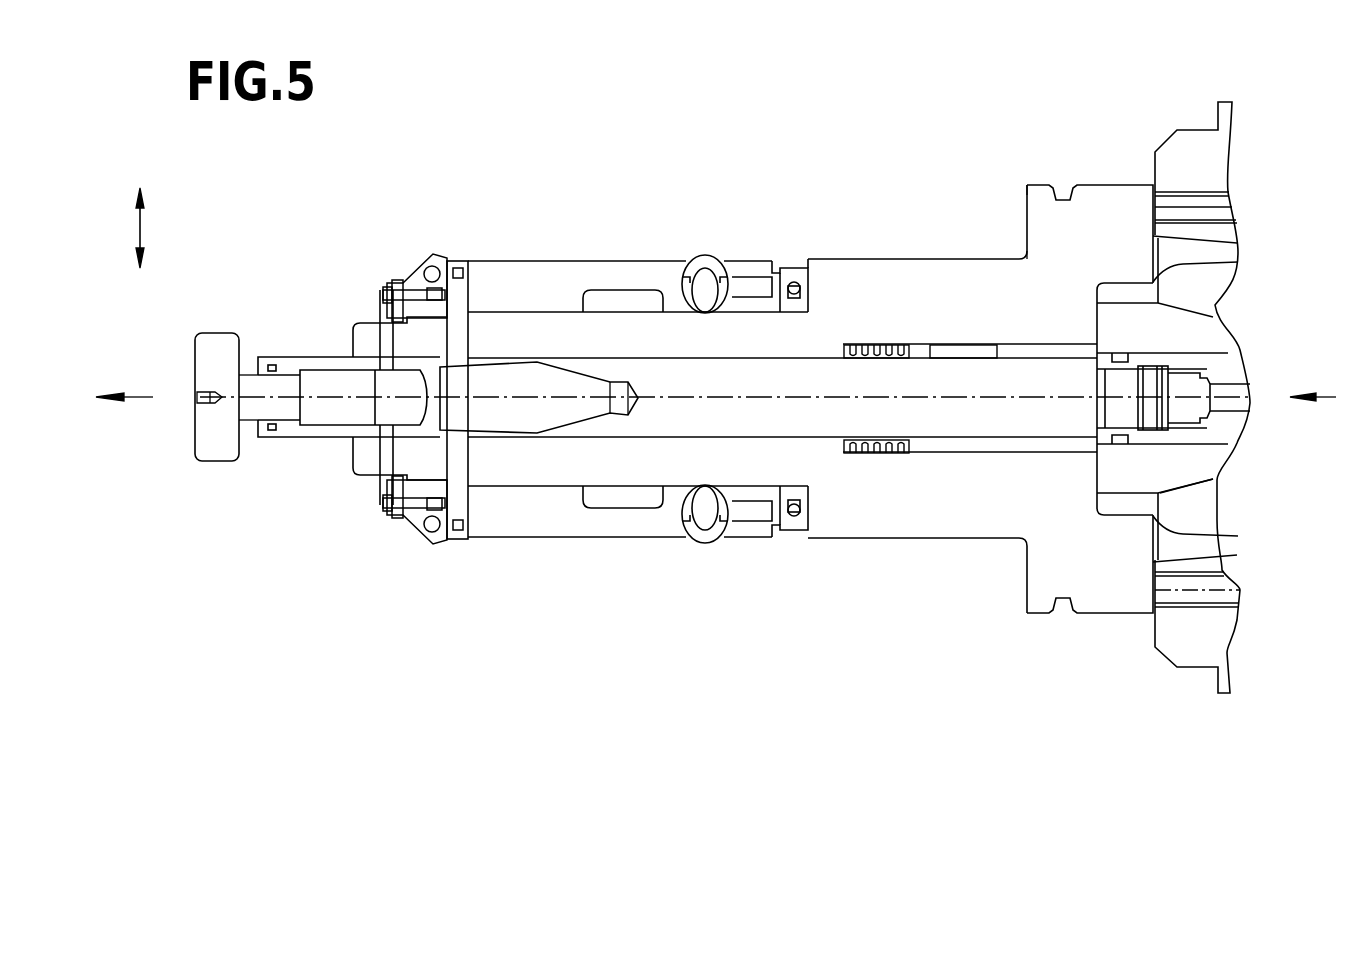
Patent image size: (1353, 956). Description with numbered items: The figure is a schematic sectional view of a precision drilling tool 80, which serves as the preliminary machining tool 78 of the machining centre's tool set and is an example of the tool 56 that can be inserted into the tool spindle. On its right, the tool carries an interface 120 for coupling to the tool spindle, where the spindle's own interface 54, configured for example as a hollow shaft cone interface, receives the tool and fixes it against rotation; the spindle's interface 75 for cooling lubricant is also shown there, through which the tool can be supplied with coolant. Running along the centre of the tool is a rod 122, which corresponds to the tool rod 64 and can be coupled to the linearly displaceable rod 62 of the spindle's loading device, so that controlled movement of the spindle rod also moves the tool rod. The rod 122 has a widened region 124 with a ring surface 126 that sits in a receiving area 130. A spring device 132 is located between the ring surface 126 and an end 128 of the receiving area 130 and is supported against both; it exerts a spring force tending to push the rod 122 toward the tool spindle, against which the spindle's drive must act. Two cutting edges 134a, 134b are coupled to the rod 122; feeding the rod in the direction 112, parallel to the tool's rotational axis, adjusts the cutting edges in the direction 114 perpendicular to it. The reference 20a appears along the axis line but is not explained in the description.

The longitudinal axis 20a is at (178, 396).
The interface 54 is at (1208, 168).
The tool 56 is at (633, 221).
The rod 62 is at (1180, 497).
The rod 64 is at (627, 438).
The interface for cooling lubricant 75 is at (1158, 378).
The preliminary machining tool 78 is at (783, 141).
The precision drilling tool 80 is at (970, 187).
The direction 112 is at (133, 398).
The direction 114 is at (140, 230).
The interface 120 is at (1103, 583).
The rod 122 is at (753, 417).
The widened region 124 is at (942, 428).
The ring surface 126 is at (910, 344).
The end 128 is at (816, 258).
The receiving area 130 is at (890, 453).
The spring device 132 is at (863, 344).
The cutting edge 134a is at (428, 255).
The cutting edge 134b is at (430, 542).